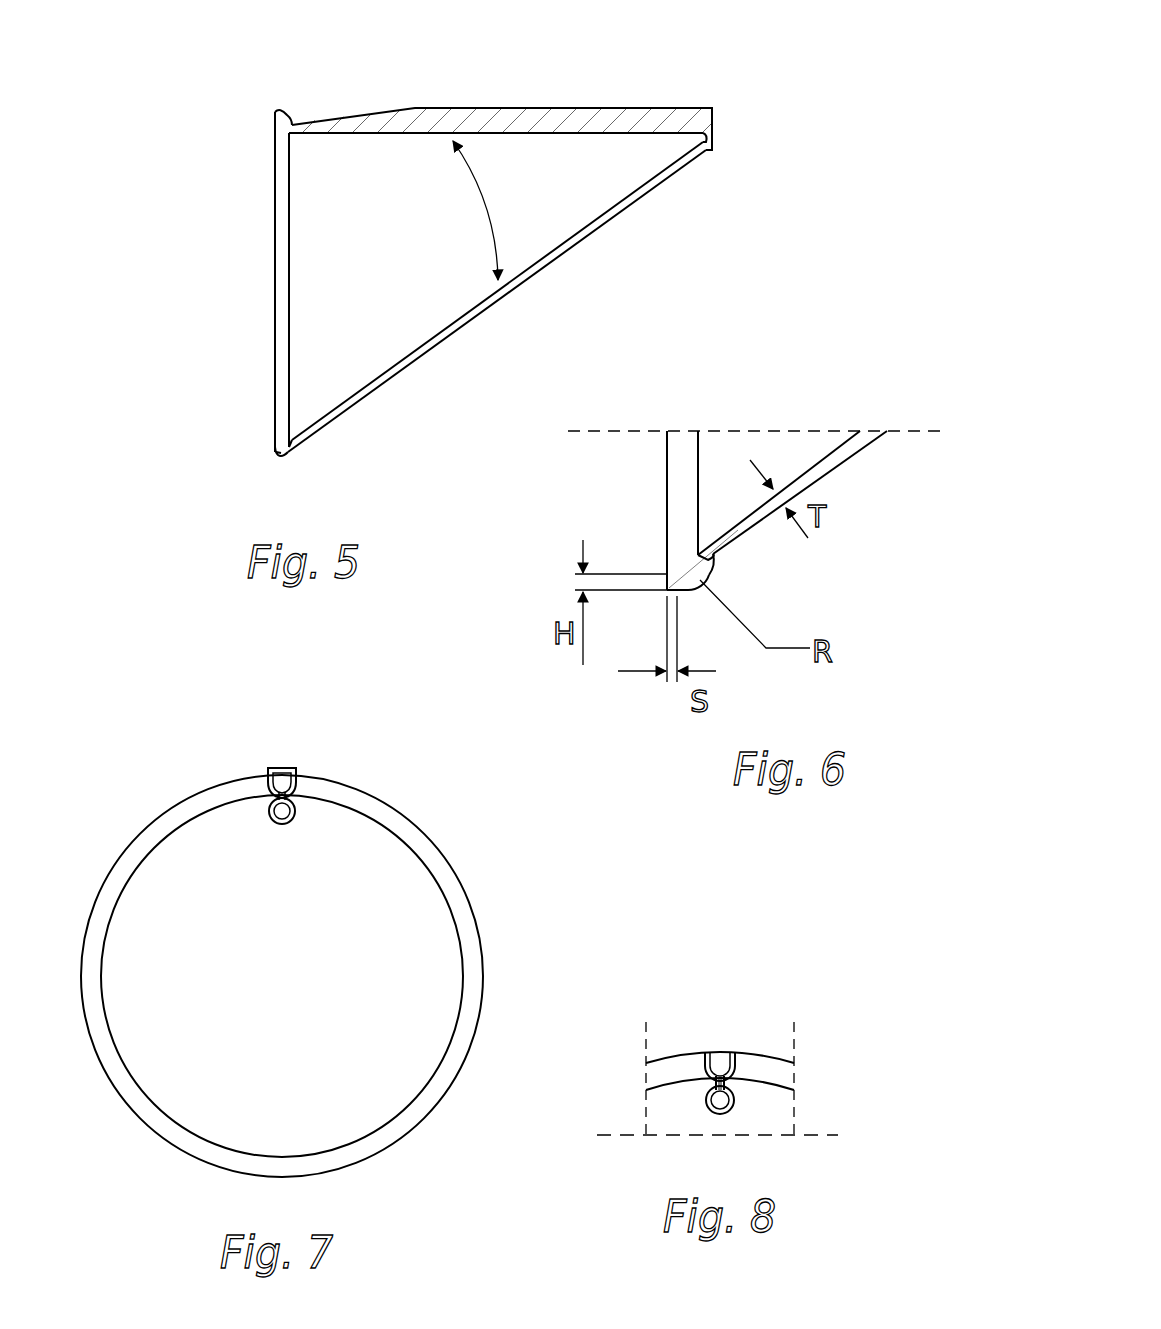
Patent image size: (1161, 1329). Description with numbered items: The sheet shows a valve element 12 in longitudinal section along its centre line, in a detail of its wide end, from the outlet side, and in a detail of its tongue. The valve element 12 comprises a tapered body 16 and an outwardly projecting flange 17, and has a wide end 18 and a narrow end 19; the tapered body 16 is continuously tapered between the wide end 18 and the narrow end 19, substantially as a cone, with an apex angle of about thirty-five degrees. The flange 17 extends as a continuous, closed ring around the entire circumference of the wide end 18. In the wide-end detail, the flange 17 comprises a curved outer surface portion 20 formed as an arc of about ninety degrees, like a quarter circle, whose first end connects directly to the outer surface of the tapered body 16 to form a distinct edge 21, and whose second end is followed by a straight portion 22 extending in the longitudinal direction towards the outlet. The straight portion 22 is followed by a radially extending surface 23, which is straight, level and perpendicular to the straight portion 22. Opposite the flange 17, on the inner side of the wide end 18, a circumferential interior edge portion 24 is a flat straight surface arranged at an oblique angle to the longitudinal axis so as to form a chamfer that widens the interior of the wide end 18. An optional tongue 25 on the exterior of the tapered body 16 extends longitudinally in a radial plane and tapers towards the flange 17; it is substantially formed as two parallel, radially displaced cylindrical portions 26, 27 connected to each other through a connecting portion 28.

In FIG. 5, the valve element 12 is at (512, 57).
In FIG. 7, the valve element 12 is at (352, 752).
In FIG. 5, the tapered body 16 is at (586, 230).
In FIG. 6, the tapered body 16 is at (840, 462).
In FIG. 7, the tapered body 16 is at (440, 940).
In FIG. 8, the tapered body 16 is at (664, 1101).
In FIG. 5, the flange 17 is at (283, 112).
In FIG. 6, the flange 17 is at (697, 592).
In FIG. 7, the flange 17 is at (440, 857).
In FIG. 8, the flange 17 is at (783, 1078).
In FIG. 5, the wide end 18 is at (289, 345).
In FIG. 5, the narrow end 19 is at (716, 138).
In FIG. 5, the curved outer surface portion 20 is at (295, 455).
In FIG. 6, the curved outer surface portion 20 is at (712, 570).
In FIG. 5, the distinct edge 21 is at (298, 441).
In FIG. 6, the distinct edge 21 is at (720, 552).
In FIG. 5, the straight portion 22 is at (279, 460).
In FIG. 6, the straight portion 22 is at (667, 598).
In FIG. 5, the radially extending surface 23 is at (272, 449).
In FIG. 6, the radially extending surface 23 is at (665, 571).
In FIG. 5, the interior edge portion 24 is at (275, 297).
In FIG. 6, the interior edge portion 24 is at (668, 471).
In FIG. 5, the tongue 25 is at (648, 118).
In FIG. 7, the tongue 25 is at (287, 768).
In FIG. 8, the tongue 25 is at (731, 1056).
In FIG. 8, the cylindrical portion 26 is at (715, 1057).
In FIG. 8, the cylindrical portion 27 is at (733, 1110).
In FIG. 8, the connecting portion 28 is at (706, 1058).